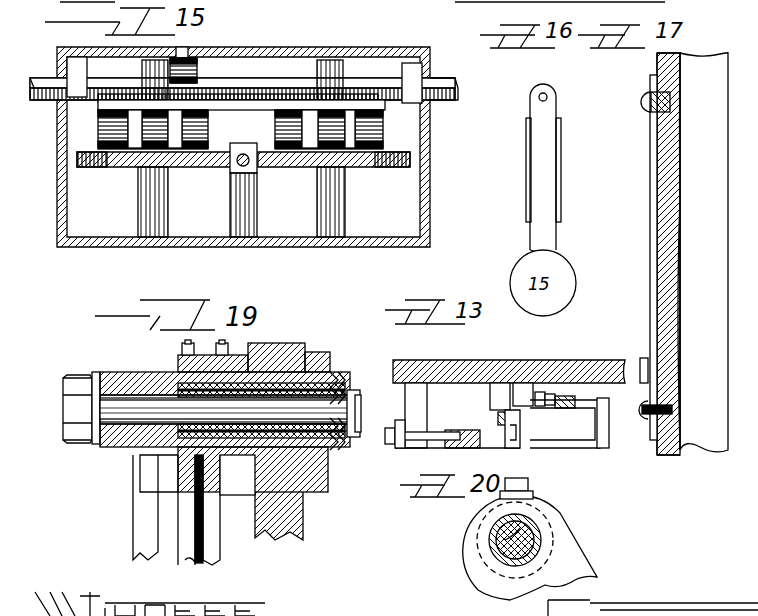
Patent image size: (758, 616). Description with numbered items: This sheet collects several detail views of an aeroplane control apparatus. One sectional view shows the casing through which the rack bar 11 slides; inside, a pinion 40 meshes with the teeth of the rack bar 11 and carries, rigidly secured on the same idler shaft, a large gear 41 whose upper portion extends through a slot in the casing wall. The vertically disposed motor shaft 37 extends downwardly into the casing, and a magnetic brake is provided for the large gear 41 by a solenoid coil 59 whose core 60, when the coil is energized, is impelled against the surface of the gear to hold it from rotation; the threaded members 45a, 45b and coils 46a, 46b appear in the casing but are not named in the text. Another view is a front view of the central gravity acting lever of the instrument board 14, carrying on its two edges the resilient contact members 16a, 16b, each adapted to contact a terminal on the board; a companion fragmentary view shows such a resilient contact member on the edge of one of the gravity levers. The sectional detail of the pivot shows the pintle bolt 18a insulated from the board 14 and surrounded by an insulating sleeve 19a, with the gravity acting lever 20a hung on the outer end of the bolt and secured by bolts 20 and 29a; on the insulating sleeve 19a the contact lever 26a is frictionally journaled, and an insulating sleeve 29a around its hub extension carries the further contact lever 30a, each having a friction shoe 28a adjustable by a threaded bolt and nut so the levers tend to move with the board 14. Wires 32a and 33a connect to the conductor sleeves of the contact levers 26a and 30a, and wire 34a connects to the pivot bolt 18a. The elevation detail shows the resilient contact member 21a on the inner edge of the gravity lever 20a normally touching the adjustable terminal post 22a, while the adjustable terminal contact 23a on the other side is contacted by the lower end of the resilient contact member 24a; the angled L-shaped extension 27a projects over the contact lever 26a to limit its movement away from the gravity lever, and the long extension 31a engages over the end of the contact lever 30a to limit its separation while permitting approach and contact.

In FIG. 15, the rack bar 11 is at (450, 90).
In FIG. 13, the instrument board 14 is at (540, 370).
In FIG. 19, the instrument board 14 is at (290, 518).
In FIG. 16, the resilient contact member 16a is at (562, 197).
In FIG. 16, the resilient contact member 16b is at (526, 205).
In FIG. 19, the pintle bolt 18a is at (115, 400).
In FIG. 20, the pintle bolt 18a is at (490, 560).
In FIG. 19, the insulating sleeve 19a is at (160, 440).
In FIG. 20, the insulating sleeve 19a is at (578, 548).
In FIG. 19, the bolt 20 is at (182, 345).
In FIG. 17, the gravity acting lever 20a is at (704, 252).
In FIG. 13, the gravity acting lever 20a is at (455, 449).
In FIG. 19, the gravity acting lever 20a is at (138, 535).
In FIG. 17, the resilient contact member 21a is at (652, 262).
In FIG. 13, the resilient contact member 21a is at (428, 448).
In FIG. 13, the adjustable terminal post 22a is at (400, 424).
In FIG. 13, the adjustable terminal contact 23a is at (525, 395).
In FIG. 13, the resilient contact member 24a is at (495, 392).
In FIG. 13, the contact lever 26a is at (499, 417).
In FIG. 19, the contact lever 26a is at (197, 548).
In FIG. 20, the contact lever 26a is at (528, 560).
In FIG. 13, the angled L-shaped extension 27a is at (508, 440).
In FIG. 20, the friction shoe 28a is at (530, 512).
In FIG. 19, the insulating sleeve 29a is at (244, 355).
In FIG. 13, the contact lever 30a is at (555, 412).
In FIG. 19, the contact lever 30a is at (215, 548).
In FIG. 13, the long extension 31a is at (560, 437).
In FIG. 19, the wire 32a is at (348, 392).
In FIG. 19, the wire 33a is at (338, 385).
In FIG. 19, the wire 34a is at (353, 440).
In FIG. 15, the motor shaft 37 is at (249, 165).
In FIG. 15, the pinion 40 is at (257, 80).
In FIG. 15, the large gear 41 is at (226, 108).
In FIG. 15, the threaded shaft 45a is at (117, 167).
In FIG. 15, the threaded shaft 45b is at (400, 160).
In FIG. 15, the coil 46a is at (100, 127).
In FIG. 15, the coil 46b is at (375, 135).
In FIG. 15, the solenoid coil 59 is at (228, 62).
In FIG. 15, the core 60 is at (184, 53).